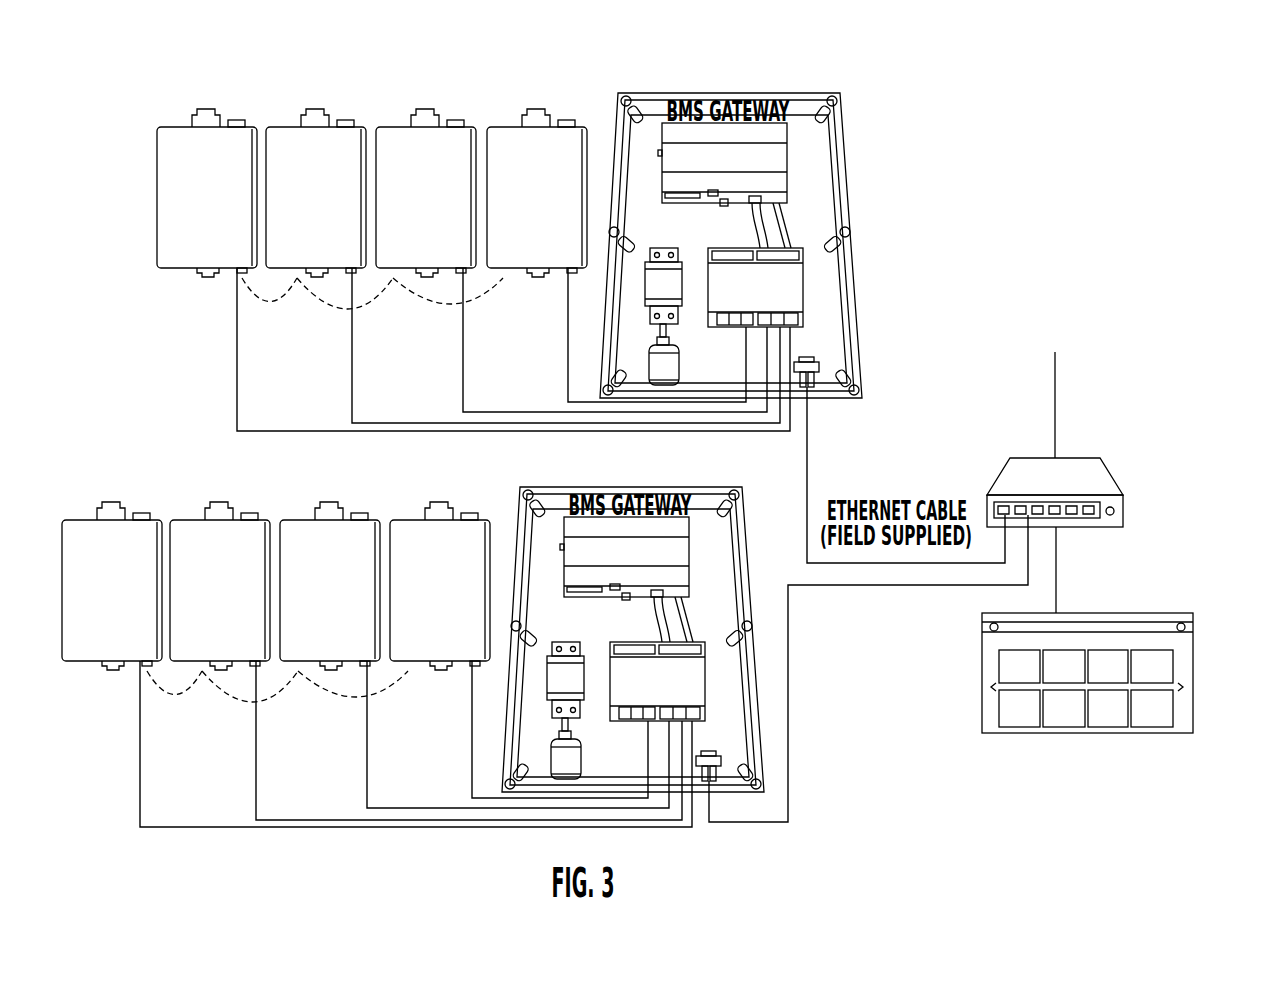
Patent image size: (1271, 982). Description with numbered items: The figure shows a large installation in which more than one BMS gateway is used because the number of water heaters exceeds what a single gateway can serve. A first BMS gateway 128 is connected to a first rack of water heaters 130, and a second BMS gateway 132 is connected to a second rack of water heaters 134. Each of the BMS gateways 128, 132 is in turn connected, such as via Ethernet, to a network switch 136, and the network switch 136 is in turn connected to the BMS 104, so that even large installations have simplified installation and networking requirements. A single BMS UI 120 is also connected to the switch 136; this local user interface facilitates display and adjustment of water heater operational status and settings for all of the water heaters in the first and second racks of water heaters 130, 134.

The BMS 104 is at (1053, 262).
The BMS user interface 120 is at (1193, 653).
The first BMS gateway 128 is at (739, 93).
The first rack of water heaters 130 is at (153, 73).
The second BMS gateway 132 is at (643, 487).
The second rack of water heaters 134 is at (57, 500).
The network switch 136 is at (1088, 458).